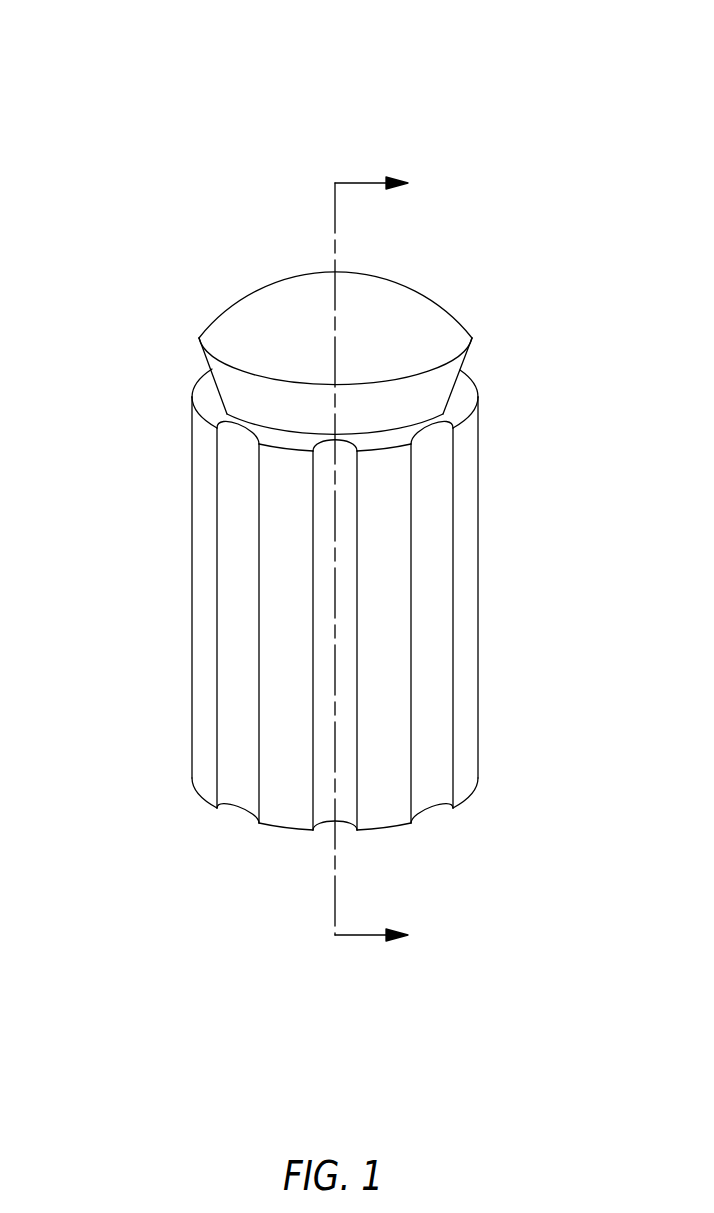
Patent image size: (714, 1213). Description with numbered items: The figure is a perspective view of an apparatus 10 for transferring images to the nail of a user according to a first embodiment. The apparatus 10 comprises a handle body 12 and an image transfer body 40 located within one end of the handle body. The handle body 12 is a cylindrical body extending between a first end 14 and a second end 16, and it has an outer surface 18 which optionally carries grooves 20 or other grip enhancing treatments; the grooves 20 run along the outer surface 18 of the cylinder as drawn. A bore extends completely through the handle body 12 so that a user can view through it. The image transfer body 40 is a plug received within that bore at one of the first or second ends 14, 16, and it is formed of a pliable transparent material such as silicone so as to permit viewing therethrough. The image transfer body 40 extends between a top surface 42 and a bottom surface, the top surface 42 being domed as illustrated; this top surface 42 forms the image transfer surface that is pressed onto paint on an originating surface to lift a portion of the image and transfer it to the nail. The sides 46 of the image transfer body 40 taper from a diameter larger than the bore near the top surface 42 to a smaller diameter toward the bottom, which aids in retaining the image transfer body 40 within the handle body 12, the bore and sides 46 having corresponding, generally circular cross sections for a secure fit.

The apparatus for forming an image on a nail 10 is at (318, 489).
The handle body 12 is at (359, 617).
The first end 14 is at (462, 402).
The second end 16 is at (273, 828).
The outer surface 18 is at (385, 798).
The grooves 20 is at (453, 503).
The image transfer body 40 is at (258, 316).
The top surface 42 is at (302, 272).
The sides 46 is at (248, 388).